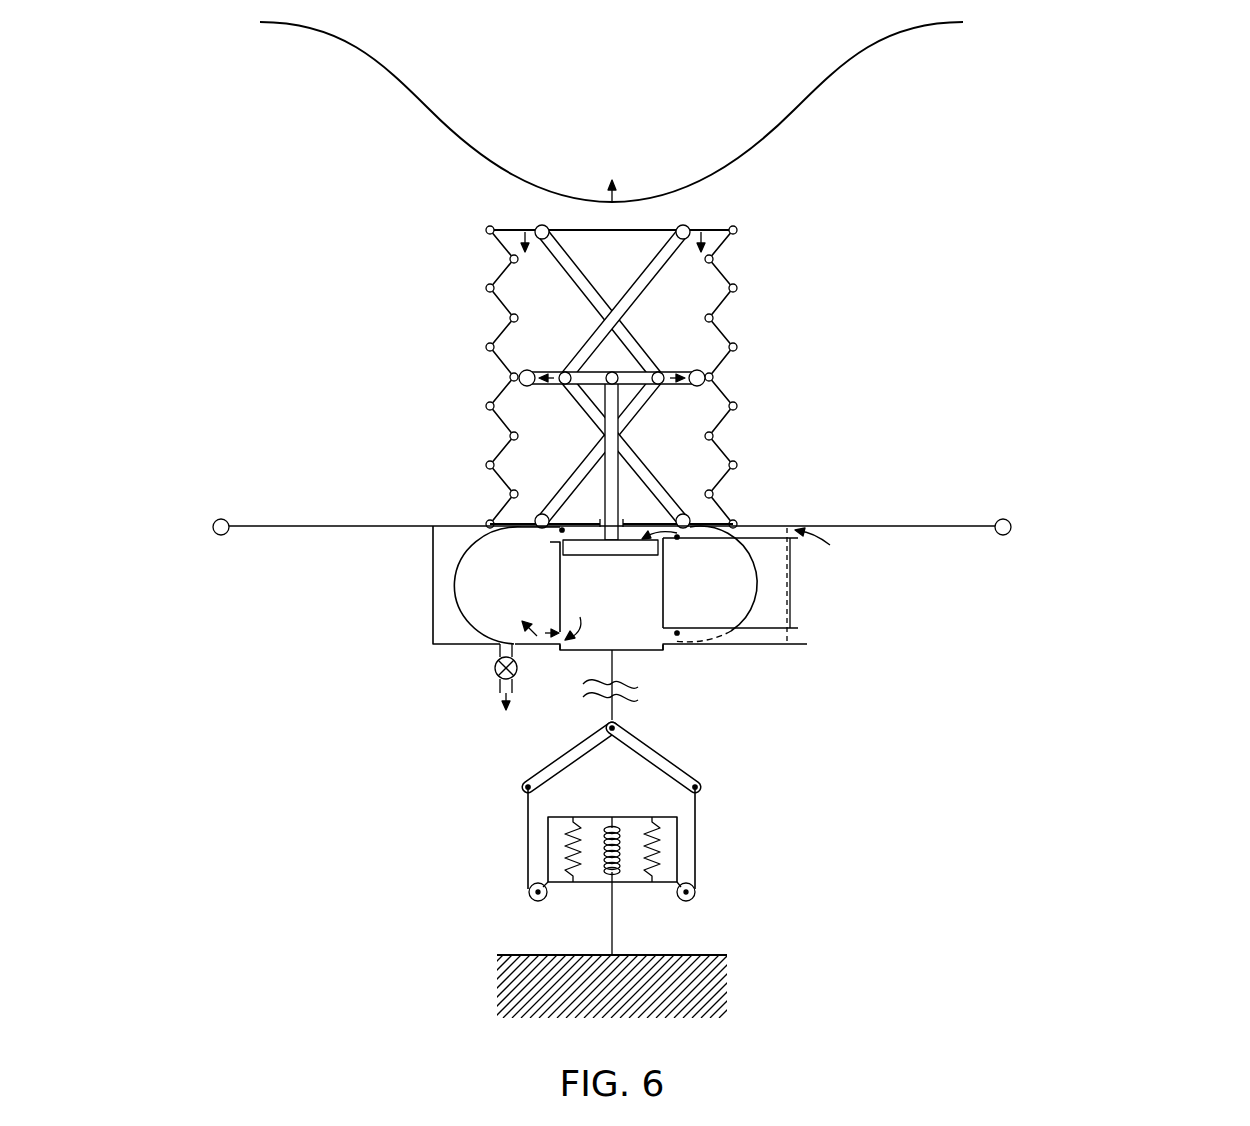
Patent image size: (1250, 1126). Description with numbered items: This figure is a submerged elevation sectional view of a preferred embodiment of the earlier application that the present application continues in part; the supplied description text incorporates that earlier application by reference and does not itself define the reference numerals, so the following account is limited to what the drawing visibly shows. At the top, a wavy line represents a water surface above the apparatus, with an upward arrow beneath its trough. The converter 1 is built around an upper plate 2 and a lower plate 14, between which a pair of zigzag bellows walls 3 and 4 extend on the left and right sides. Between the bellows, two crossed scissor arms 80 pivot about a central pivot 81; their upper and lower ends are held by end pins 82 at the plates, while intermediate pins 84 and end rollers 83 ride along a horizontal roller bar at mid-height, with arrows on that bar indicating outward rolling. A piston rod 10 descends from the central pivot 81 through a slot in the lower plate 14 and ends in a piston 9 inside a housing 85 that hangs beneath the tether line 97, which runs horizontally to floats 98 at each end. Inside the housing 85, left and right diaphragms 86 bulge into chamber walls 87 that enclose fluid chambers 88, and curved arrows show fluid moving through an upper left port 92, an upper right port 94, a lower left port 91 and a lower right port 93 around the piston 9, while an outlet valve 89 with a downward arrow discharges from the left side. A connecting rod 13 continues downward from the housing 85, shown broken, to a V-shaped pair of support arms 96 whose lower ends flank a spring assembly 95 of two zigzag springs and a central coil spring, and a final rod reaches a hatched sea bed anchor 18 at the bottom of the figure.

The wave energy converter 1 is at (518, 523).
The upper plate 2 is at (511, 226).
The bellows wall 3 is at (503, 333).
The bellows chamber 4 is at (695, 283).
The piston 9 is at (612, 555).
The piston rod 10 is at (613, 485).
The connecting rod 13 is at (647, 634).
The lower plate 14 is at (587, 533).
The sea bed anchor 18 is at (611, 918).
The scissor arm 80 is at (578, 290).
The central pivot 81 is at (622, 367).
The end pin 82 is at (541, 226).
The roller 83 is at (525, 368).
The intermediate pin 84 is at (569, 385).
The housing 85 is at (433, 607).
The diaphragm 86 is at (460, 566).
The chamber wall 87 is at (452, 586).
The fluid chamber 88 is at (499, 607).
The outlet valve 89 is at (494, 668).
The lower left port 91 is at (553, 647).
The upper left port 92 is at (562, 531).
The lower right port 93 is at (677, 635).
The upper right port 94 is at (677, 540).
The spring assembly 95 is at (632, 872).
The support arm 96 is at (527, 838).
The tether line 97 is at (316, 526).
The float 98 is at (221, 519).